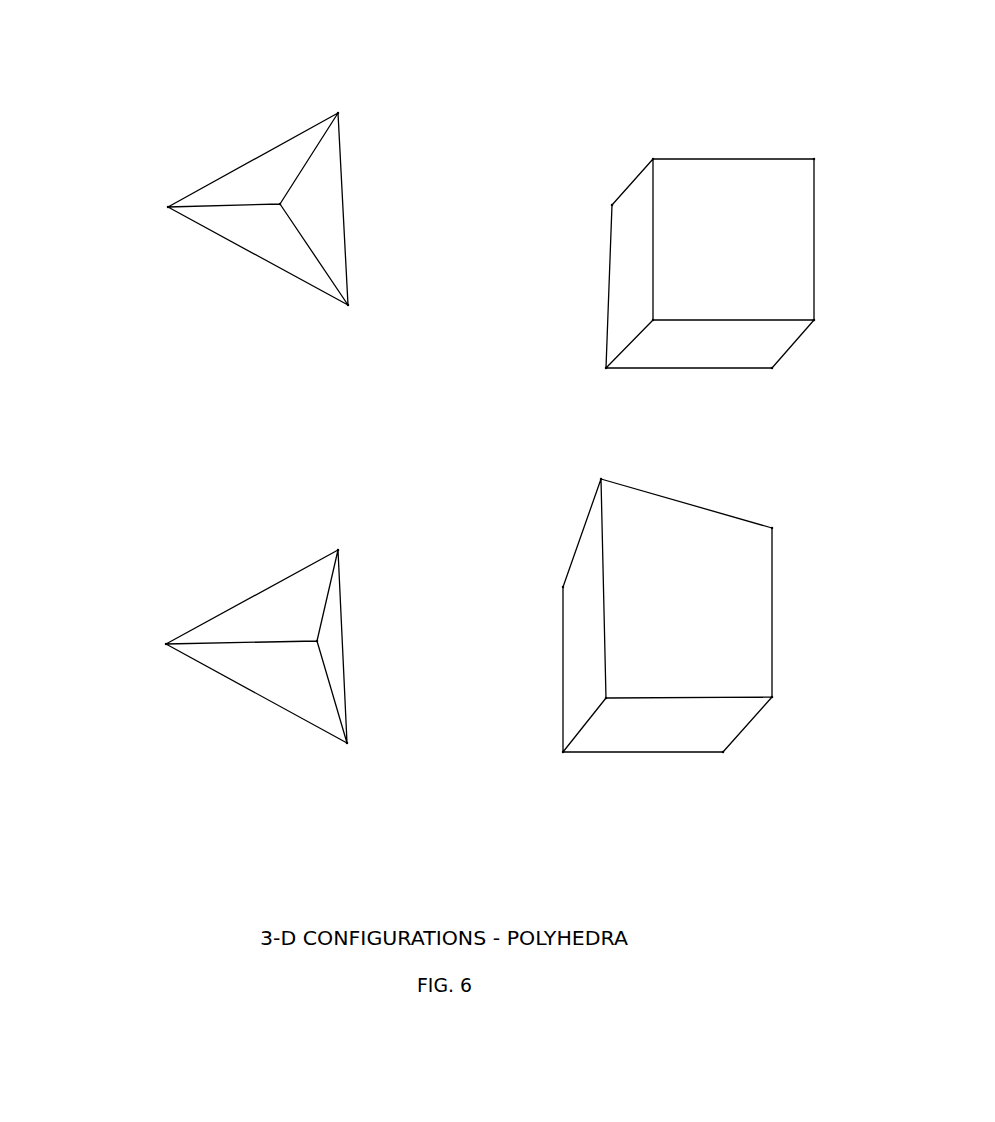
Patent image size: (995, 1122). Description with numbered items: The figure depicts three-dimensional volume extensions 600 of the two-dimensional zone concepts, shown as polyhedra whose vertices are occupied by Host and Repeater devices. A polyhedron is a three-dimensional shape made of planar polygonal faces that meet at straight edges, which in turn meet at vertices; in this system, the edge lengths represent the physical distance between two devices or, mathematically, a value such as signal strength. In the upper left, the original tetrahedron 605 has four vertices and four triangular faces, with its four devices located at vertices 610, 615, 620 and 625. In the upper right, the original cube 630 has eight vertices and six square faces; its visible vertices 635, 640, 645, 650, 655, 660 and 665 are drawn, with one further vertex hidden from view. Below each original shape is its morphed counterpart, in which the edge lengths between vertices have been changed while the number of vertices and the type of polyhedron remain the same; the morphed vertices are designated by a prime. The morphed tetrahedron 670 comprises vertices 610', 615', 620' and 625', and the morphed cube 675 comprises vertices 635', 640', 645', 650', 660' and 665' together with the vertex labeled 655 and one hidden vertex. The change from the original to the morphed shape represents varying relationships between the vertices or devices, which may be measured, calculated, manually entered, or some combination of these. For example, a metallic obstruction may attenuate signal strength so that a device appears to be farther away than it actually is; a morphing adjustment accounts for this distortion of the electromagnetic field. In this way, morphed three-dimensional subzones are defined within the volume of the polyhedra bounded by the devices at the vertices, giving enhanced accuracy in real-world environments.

The three-dimensional volume extensions 600 is at (88, 18).
The original tetrahedron 605 is at (250, 157).
The vertex 610 is at (358, 86).
The vertex 615 is at (385, 300).
The vertex 620 is at (141, 229).
The vertex 625 is at (346, 162).
The original cube 630 is at (640, 170).
The vertex 635 is at (673, 133).
The vertex 640 is at (834, 133).
The vertex 645 is at (848, 295).
The vertex 650 is at (805, 385).
The vertex 655 is at (653, 320).
The vertex 660 is at (574, 390).
The vertex 665 is at (570, 225).
The morphed tetrahedron 670 is at (248, 597).
The vertex 610' is at (359, 523).
The vertex 615' is at (385, 738).
The vertex 620' is at (139, 666).
The vertex 625' is at (381, 598).
The morphed cube 675 is at (577, 553).
The vertex 635' is at (625, 452).
The vertex 640' is at (790, 502).
The vertex 645' is at (807, 667).
The vertex 650' is at (763, 767).
The vertex 660' is at (534, 771).
The vertex 665' is at (518, 606).